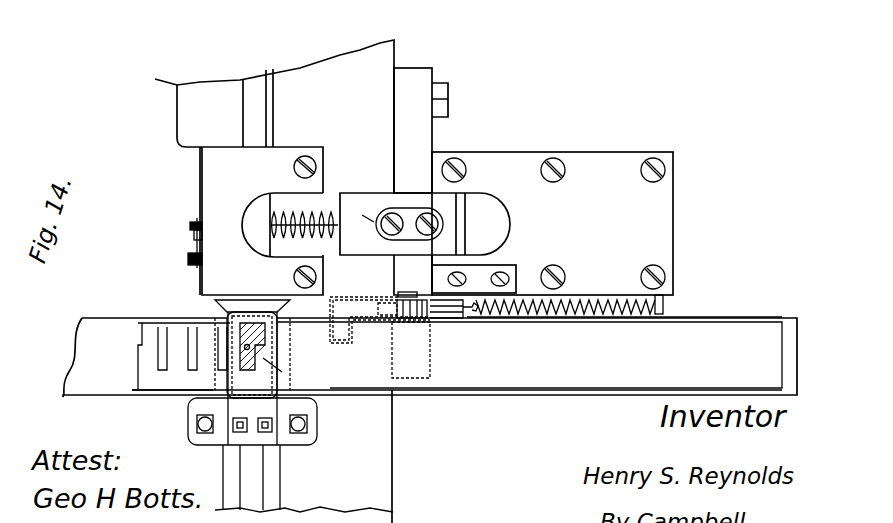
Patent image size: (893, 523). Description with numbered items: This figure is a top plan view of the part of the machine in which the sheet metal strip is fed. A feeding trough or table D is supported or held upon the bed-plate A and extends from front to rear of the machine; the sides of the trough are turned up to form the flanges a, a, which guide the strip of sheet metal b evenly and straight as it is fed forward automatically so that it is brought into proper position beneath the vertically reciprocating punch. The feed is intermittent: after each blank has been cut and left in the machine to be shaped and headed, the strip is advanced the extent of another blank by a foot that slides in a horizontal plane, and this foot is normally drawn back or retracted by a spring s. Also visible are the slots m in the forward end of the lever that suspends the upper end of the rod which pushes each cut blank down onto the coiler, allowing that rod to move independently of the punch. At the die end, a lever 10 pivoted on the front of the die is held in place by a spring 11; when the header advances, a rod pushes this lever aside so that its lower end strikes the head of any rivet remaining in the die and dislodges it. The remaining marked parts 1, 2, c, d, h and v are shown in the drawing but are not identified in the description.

The bolt 1 is at (415, 330).
The bracket 2 is at (352, 335).
The lever 10 is at (200, 222).
The spring 11 is at (192, 254).
The flanges a is at (417, 353).
The strip of sheet metal b is at (457, 356).
The carriage c is at (268, 342).
The slide d is at (285, 372).
The bracket h is at (290, 455).
The spring s is at (528, 318).
The slots m is at (364, 210).
The spring v is at (262, 214).
The bed-plate A is at (323, 240).
The feeding trough or table D is at (797, 330).